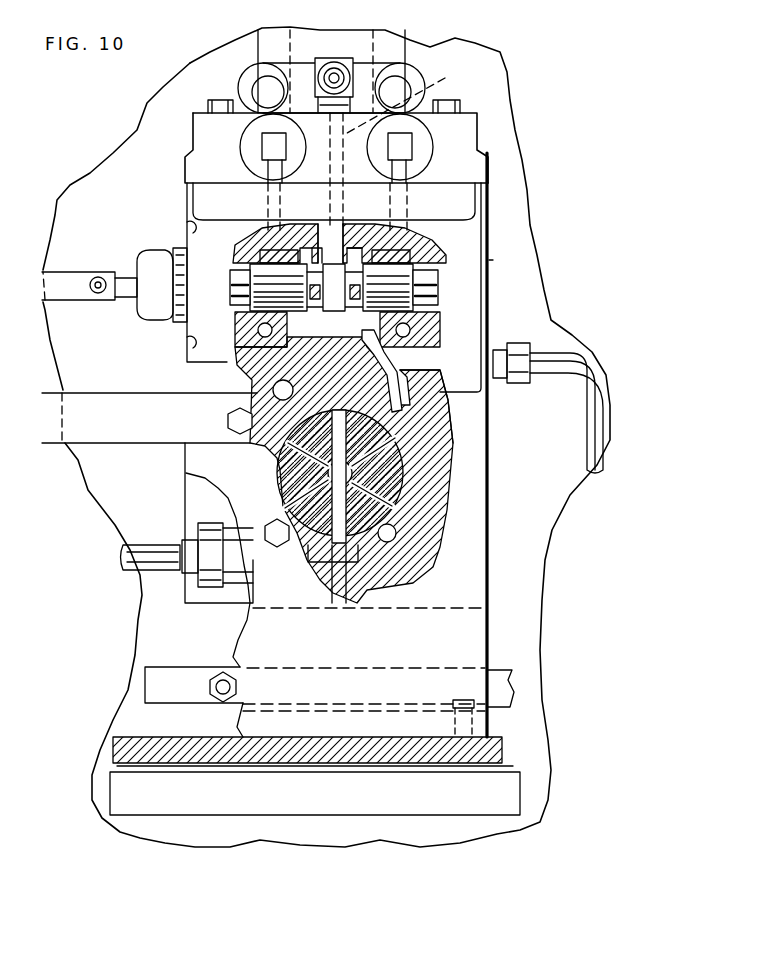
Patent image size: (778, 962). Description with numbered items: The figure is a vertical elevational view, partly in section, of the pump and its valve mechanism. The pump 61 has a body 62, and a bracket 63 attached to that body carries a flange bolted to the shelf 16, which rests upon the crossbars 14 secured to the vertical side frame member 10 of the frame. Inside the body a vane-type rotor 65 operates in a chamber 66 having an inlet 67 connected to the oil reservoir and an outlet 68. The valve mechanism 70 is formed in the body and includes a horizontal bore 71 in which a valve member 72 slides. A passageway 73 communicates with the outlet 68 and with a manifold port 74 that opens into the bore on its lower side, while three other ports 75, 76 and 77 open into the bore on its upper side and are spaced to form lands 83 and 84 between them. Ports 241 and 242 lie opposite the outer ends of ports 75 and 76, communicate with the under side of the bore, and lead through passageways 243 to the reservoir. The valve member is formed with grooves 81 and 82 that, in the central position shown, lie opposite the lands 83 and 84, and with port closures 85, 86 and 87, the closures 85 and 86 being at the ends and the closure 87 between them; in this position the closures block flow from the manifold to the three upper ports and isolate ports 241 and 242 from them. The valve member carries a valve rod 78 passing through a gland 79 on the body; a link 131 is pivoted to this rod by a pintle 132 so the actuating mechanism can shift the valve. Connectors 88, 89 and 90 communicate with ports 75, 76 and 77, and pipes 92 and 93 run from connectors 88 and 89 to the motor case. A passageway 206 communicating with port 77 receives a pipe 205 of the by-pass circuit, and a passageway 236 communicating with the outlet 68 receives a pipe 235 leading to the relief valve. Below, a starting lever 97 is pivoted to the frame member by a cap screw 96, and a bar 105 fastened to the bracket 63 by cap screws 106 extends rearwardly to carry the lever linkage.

The vertical side frame member 10 is at (113, 160).
The crossbar 14 is at (235, 800).
The shelf 16 is at (128, 746).
The pump 61 is at (480, 285).
The body 62 is at (447, 448).
The bracket 63 is at (465, 560).
The vane-type rotor 65 is at (355, 590).
The chamber 66 is at (365, 545).
The inlet 67 is at (290, 396).
The outlet 68 is at (440, 437).
The valve mechanism 70 is at (415, 282).
The bore 71 is at (502, 258).
The valve member 72 is at (258, 278).
The passageway 73 is at (392, 402).
The manifold port 74 is at (265, 357).
The port 75 is at (282, 256).
The port 76 is at (420, 262).
The port 77 is at (335, 245).
The valve rod 78 is at (243, 290).
The gland 79 is at (156, 252).
The groove 81 is at (322, 222).
The groove 82 is at (356, 258).
The land 83 is at (316, 258).
The land 84 is at (380, 256).
The port closure 85 is at (248, 296).
The port closure 86 is at (398, 287).
The port closure 87 is at (337, 305).
The connector 88 is at (262, 147).
The connector 89 is at (410, 147).
The connector 90 is at (350, 78).
The pipe 92 is at (265, 92).
The pipe 93 is at (400, 90).
The cap screw 96 is at (222, 685).
The starting lever 97 is at (175, 683).
The bar 105 is at (141, 430).
The cap screw 106 is at (240, 434).
The link 131 is at (78, 292).
The pintle 132 is at (98, 277).
The pipe 205 is at (333, 68).
The passageway 206 is at (412, 103).
The pipe 235 is at (592, 385).
The passageway 236 is at (498, 348).
The port 241 is at (258, 324).
The port 242 is at (410, 330).
The passageway 243 is at (262, 342).